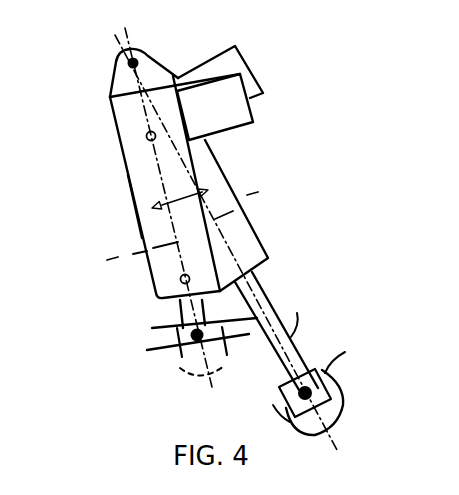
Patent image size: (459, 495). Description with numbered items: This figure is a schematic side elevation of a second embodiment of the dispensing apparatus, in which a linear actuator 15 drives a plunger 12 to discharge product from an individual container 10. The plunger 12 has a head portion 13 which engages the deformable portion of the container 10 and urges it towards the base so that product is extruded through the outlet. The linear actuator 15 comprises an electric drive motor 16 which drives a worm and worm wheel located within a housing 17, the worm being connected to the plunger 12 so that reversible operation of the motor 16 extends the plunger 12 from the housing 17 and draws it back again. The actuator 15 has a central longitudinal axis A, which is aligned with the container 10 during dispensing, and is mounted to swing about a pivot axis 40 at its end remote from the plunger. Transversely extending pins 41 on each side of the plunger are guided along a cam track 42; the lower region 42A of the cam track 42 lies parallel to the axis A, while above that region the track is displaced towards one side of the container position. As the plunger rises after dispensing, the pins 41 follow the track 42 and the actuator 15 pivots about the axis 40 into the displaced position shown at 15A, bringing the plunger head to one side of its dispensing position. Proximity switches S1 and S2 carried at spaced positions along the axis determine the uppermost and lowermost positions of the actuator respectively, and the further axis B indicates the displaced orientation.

The container 10 is at (293, 440).
The plunger 12 is at (322, 334).
The head portion 13 is at (180, 373).
The linear actuator 15 is at (262, 213).
The displaced position of linear actuator 15A is at (133, 196).
The electric drive motor 16 is at (237, 118).
The housing 17 is at (130, 155).
The pivot axis 40 is at (127, 60).
The pins 41 is at (182, 323).
The cam track 42 is at (249, 334).
The lower region of cam track 42A is at (303, 307).
The central longitudinal axis A is at (186, 224).
The axis B is at (342, 356).
The proximity switch S1 is at (147, 134).
The proximity switch S2 is at (181, 278).